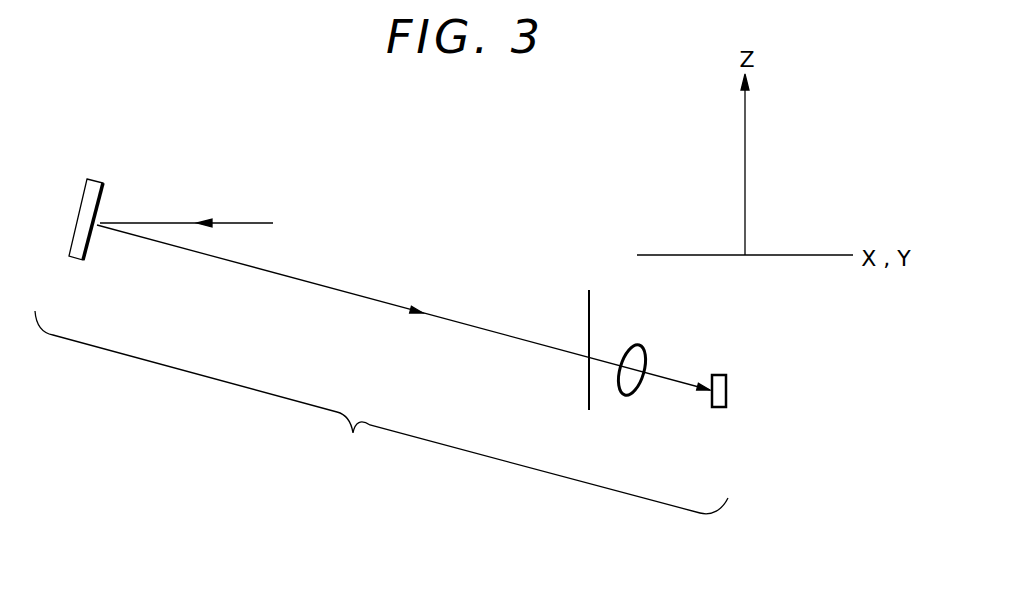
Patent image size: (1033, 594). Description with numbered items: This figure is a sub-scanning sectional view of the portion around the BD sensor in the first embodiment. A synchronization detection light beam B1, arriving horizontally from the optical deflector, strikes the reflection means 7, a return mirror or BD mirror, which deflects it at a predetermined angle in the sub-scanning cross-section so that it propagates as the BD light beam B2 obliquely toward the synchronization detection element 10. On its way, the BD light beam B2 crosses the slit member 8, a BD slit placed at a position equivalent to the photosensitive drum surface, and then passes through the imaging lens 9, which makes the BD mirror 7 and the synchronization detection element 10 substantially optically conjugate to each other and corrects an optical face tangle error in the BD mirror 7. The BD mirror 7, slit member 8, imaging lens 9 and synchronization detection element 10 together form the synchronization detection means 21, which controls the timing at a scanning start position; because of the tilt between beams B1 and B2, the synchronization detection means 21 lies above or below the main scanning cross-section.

The reflection means 7 is at (78, 262).
The synchronization detection light beam B1 is at (170, 222).
The BD light beam B2 is at (273, 273).
The slit member 8 is at (589, 305).
The imaging lens 9 is at (635, 347).
The synchronization detection element 10 is at (718, 375).
The synchronization detection means 21 is at (381, 412).